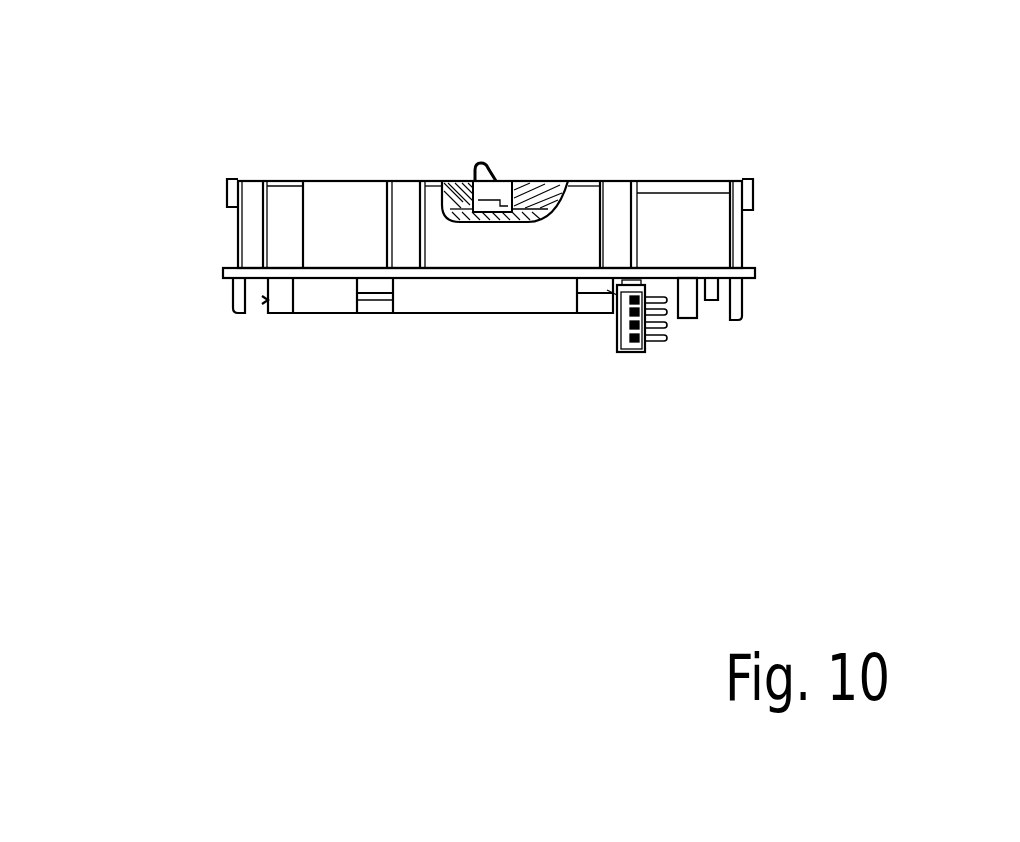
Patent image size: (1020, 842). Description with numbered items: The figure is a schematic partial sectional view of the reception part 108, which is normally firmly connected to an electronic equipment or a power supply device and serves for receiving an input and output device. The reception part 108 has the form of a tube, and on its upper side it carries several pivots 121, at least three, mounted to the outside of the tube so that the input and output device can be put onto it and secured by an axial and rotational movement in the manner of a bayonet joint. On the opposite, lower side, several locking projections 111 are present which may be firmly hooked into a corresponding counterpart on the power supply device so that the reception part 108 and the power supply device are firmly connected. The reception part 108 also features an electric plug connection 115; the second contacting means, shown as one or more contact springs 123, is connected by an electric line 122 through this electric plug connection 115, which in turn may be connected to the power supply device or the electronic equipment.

The reception part 108 is at (772, 276).
The locking projections 111 is at (267, 308).
The electric plug connection 115 is at (613, 357).
The pivots 121 is at (233, 194).
The electric line 122 is at (541, 186).
The contact springs 123 is at (491, 172).